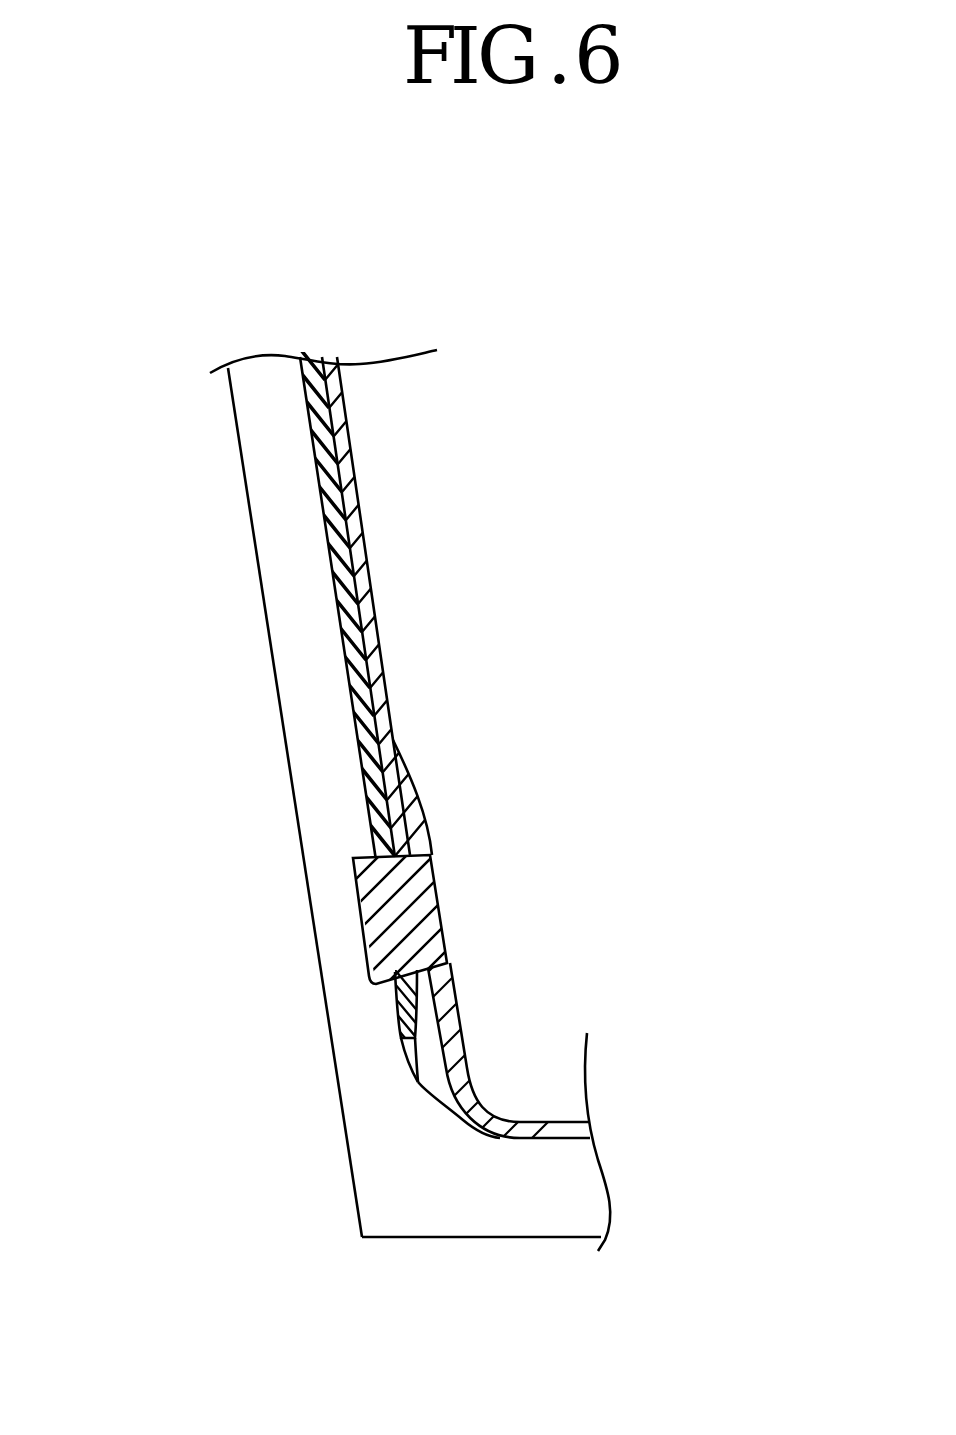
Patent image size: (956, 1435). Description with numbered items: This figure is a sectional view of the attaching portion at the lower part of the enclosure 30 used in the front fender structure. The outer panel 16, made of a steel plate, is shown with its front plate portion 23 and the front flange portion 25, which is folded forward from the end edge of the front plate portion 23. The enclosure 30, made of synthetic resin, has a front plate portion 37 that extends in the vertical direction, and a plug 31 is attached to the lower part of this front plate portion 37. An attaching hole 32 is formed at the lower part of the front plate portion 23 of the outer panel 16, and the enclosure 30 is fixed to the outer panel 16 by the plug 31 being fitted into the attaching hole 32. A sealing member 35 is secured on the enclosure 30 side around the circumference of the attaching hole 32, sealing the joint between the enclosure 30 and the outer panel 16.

The outer panel 16 is at (483, 1262).
The front plate portion 23 is at (392, 712).
The front flange portion 25 is at (287, 604).
The enclosure 30 is at (313, 423).
The plug 31 is at (366, 929).
The attaching hole 32 is at (445, 943).
The sealing member 35 is at (416, 1084).
The front plate portion 37 is at (352, 727).